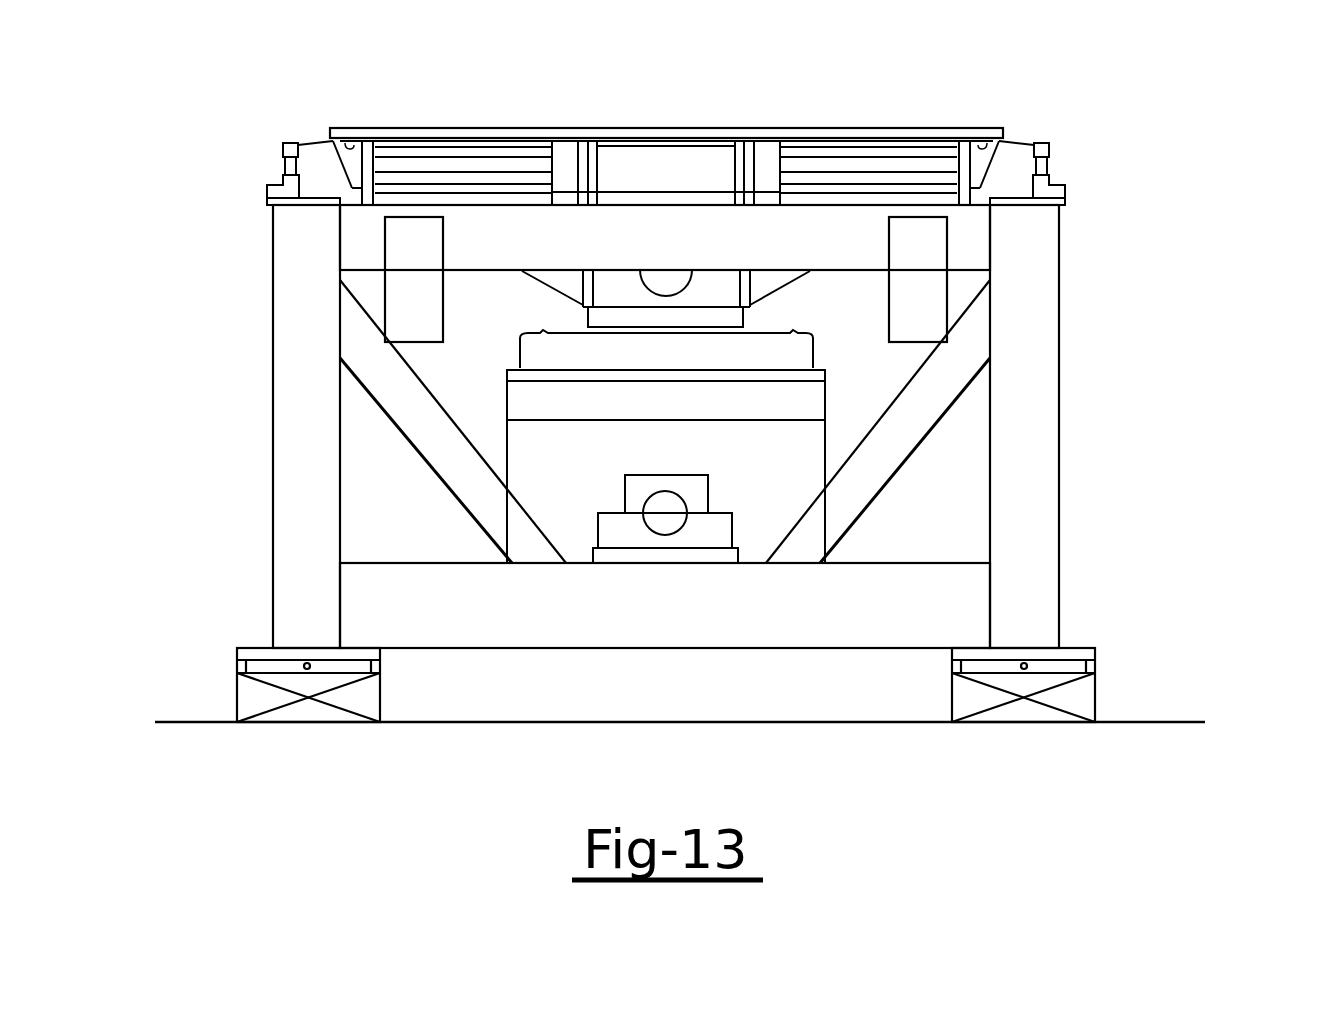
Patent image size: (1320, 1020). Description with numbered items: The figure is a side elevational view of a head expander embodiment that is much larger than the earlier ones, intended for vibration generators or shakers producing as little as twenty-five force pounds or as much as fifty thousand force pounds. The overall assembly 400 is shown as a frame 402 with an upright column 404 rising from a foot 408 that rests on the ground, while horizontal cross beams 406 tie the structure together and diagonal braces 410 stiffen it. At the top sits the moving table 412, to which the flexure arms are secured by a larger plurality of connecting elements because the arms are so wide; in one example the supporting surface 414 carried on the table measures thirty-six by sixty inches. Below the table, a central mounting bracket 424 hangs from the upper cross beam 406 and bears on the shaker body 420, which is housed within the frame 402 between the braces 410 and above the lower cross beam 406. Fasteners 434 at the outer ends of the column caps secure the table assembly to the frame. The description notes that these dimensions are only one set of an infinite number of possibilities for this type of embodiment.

The vibration test assembly 400 is at (1165, 296).
The frame 402 is at (1037, 490).
The upright column 404 is at (300, 516).
The cross beam 406 is at (495, 247).
The foot / base pad 408 is at (250, 657).
The diagonal brace 410 is at (437, 453).
The moving table 412 is at (834, 160).
The supporting surface 414 is at (504, 128).
The shaker body 420 is at (598, 482).
The central mounting bracket 424 is at (637, 320).
The fastener / bolt 434 is at (266, 142).